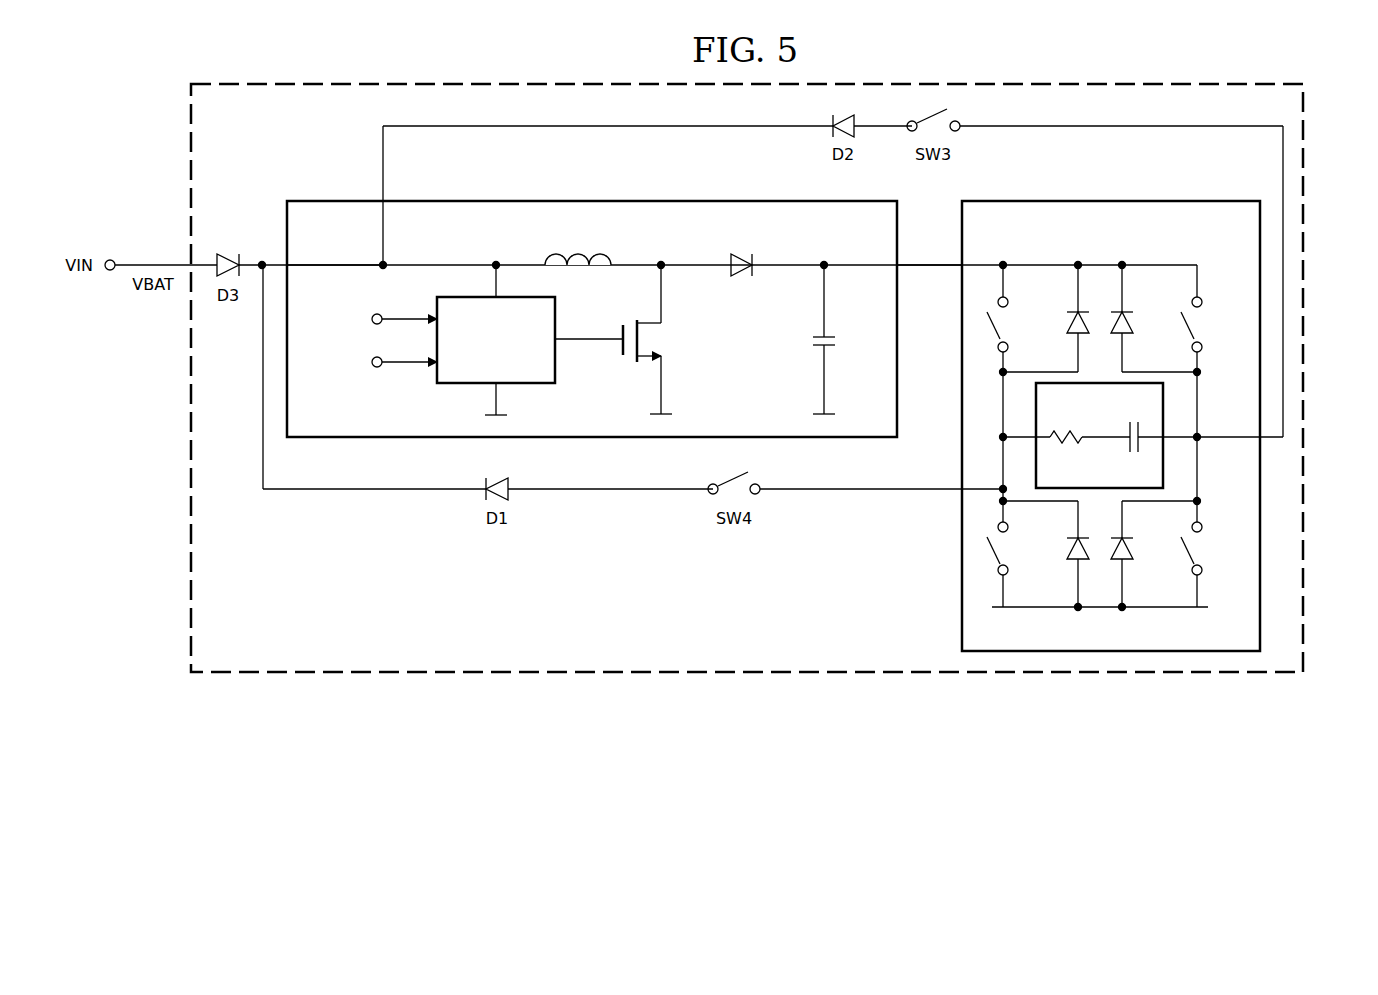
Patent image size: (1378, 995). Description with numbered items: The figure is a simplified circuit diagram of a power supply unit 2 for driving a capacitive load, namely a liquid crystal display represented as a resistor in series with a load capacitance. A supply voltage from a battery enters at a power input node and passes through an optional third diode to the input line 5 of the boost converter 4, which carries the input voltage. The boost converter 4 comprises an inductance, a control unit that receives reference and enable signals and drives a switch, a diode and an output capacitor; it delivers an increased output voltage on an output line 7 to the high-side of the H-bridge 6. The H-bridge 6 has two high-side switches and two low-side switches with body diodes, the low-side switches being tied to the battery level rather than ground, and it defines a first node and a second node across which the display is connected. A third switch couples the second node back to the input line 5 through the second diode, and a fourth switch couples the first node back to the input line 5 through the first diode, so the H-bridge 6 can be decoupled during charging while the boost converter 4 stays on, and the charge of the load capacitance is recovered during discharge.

The power supply unit 2 is at (1095, 80).
The boost converter 4 is at (526, 198).
The input line 5 is at (342, 262).
The H-bridge 6 is at (1170, 198).
The output line 7 is at (922, 262).